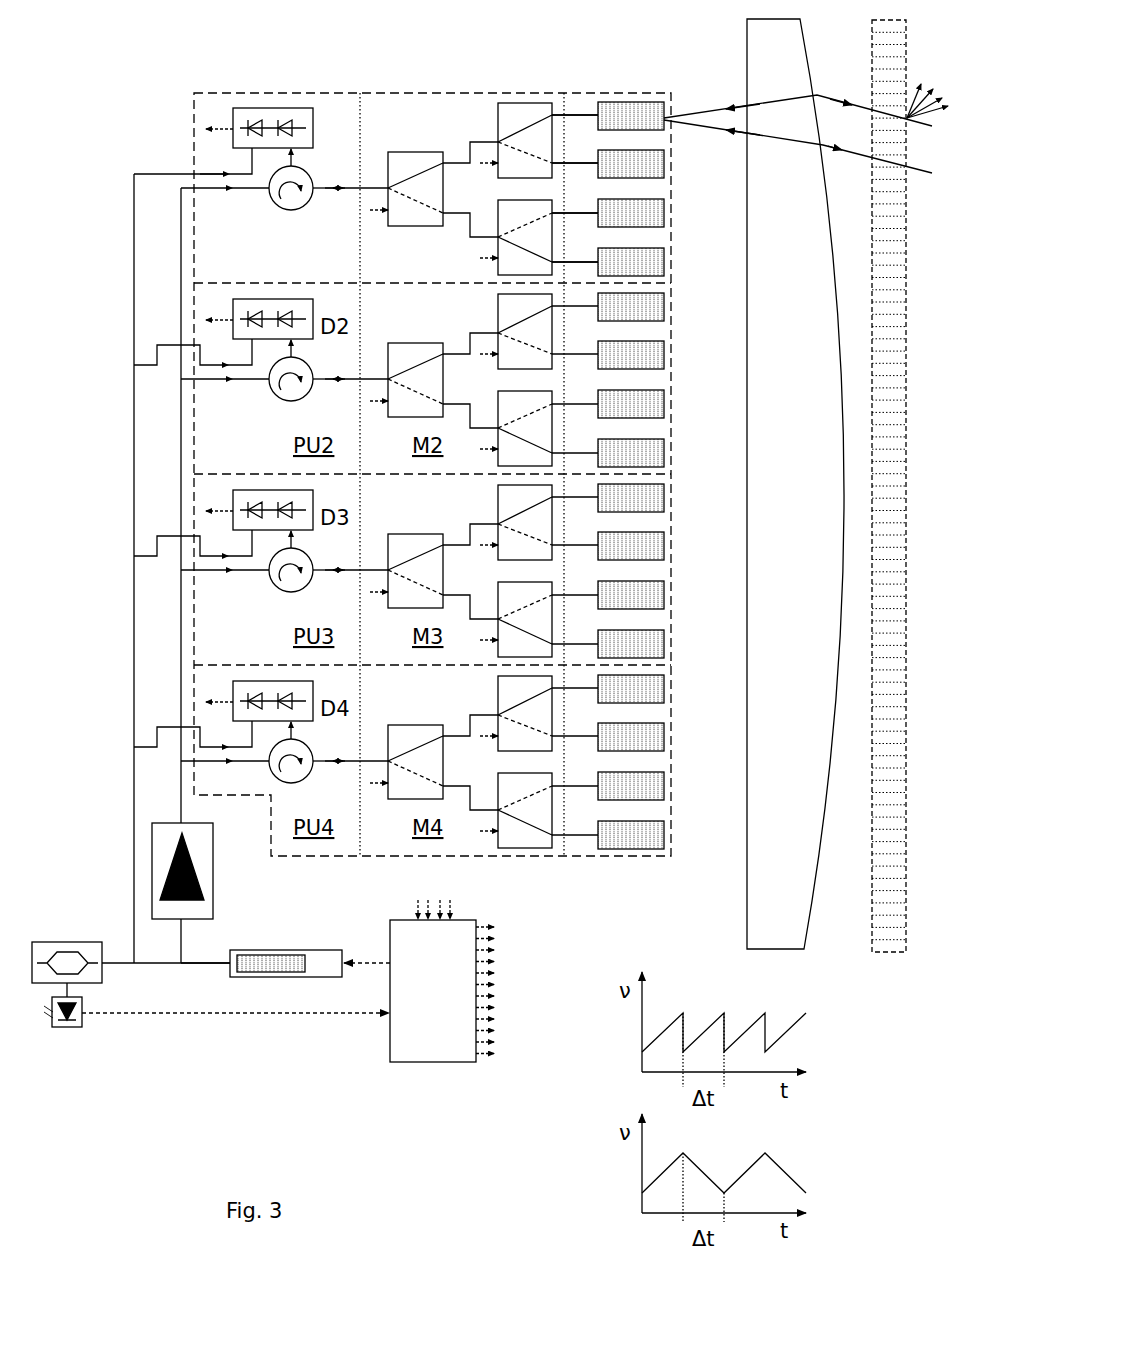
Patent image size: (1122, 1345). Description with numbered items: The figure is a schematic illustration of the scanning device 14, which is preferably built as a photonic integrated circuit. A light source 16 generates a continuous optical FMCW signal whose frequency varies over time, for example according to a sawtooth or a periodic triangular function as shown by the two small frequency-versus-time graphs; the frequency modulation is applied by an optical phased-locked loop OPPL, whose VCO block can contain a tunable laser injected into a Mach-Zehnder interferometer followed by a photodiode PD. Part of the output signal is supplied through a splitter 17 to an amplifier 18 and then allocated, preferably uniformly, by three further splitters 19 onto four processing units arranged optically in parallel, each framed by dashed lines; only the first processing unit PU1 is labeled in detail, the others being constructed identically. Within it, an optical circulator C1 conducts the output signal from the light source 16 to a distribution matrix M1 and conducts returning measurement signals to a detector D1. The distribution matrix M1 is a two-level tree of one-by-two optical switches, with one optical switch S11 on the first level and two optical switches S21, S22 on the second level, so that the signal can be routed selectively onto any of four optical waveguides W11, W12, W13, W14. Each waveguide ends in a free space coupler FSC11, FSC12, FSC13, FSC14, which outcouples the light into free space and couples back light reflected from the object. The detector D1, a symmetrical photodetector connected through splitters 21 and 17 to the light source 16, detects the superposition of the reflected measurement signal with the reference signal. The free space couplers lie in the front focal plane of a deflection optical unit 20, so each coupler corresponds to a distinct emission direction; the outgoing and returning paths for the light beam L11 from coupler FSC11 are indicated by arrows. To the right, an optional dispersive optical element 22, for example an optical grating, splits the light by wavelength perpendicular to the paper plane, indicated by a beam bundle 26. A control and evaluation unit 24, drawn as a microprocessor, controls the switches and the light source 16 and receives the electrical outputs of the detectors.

The scanning device 14 is at (165, 62).
The light source 16 is at (266, 948).
The splitter 17 is at (178, 967).
The amplifier 18 is at (206, 894).
The splitters 19 is at (181, 378).
The deflection optical unit 20 is at (752, 898).
The splitters 21 is at (134, 363).
The dispersive optical element 22 is at (887, 948).
The control and evaluation unit 24 is at (413, 1062).
The beam bundle 26 is at (930, 72).
The detector D1 is at (313, 120).
The optical circulator C1 is at (272, 206).
The processing unit PU1 is at (313, 255).
The distribution matrix M1 is at (427, 255).
The optical switch S11 is at (395, 152).
The optical switch S21 is at (517, 189).
The optical switch S22 is at (498, 205).
The optical waveguide W11 is at (574, 113).
The optical waveguide W12 is at (586, 161).
The optical waveguide W13 is at (585, 212).
The optical waveguide W14 is at (585, 261).
The free space coupler FSC11 is at (671, 169).
The free space coupler FSC12 is at (670, 189).
The free space coupler FSC13 is at (670, 189).
The free space coupler FSC14 is at (668, 259).
The light beam L11 is at (846, 84).
The optical phased-locked loop OPPL is at (54, 945).
The photodiode PD is at (68, 1028).